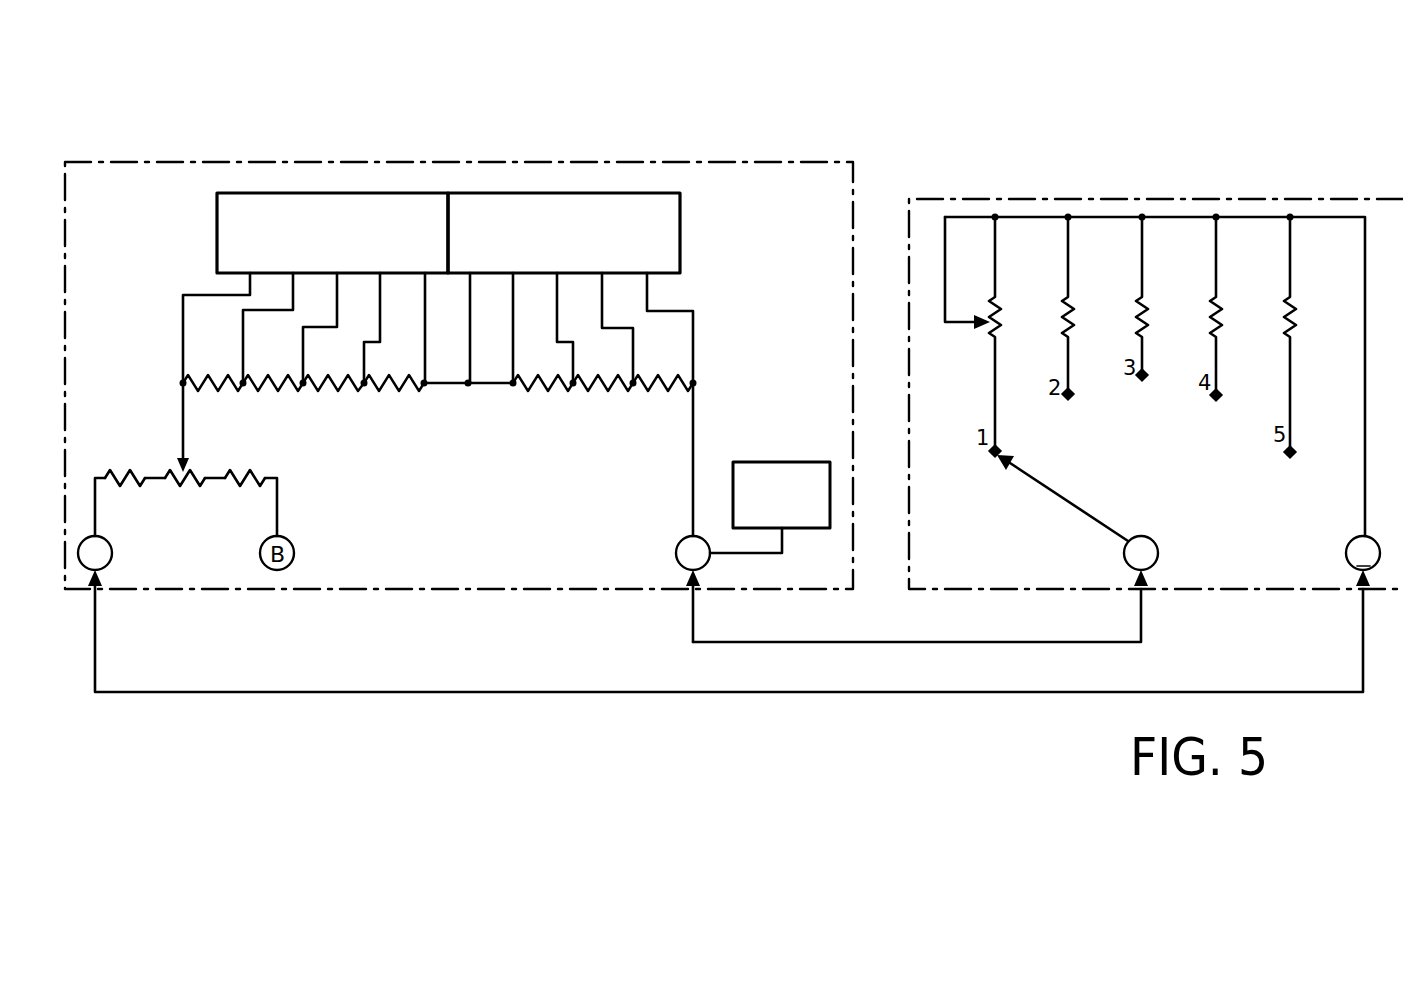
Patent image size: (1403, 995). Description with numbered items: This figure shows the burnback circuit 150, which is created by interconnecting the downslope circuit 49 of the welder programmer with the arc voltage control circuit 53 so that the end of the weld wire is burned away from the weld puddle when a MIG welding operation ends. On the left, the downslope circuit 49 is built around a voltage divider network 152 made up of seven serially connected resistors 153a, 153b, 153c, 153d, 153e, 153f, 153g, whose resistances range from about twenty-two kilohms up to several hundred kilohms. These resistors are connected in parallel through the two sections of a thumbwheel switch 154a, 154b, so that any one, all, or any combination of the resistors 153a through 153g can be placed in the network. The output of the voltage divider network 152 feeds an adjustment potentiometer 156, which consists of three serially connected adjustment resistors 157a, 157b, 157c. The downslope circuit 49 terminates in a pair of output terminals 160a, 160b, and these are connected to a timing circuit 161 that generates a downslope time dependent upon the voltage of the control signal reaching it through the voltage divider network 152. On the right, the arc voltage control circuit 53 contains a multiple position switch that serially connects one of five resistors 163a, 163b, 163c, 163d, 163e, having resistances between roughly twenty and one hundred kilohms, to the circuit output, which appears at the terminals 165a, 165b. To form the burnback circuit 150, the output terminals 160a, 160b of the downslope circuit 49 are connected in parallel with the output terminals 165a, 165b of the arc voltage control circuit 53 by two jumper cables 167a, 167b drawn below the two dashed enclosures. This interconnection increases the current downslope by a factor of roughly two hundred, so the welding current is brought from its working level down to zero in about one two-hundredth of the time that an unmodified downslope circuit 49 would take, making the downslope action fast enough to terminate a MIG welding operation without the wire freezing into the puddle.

The downslope circuit 49 is at (166, 182).
The arc voltage control circuit 53 is at (922, 212).
The burnback circuit 150 is at (872, 100).
The voltage divider network 152 is at (150, 321).
The resistor 153a is at (208, 390).
The resistor 153b is at (267, 390).
The resistor 153c is at (340, 390).
The resistor 153d is at (392, 392).
The resistor 153e is at (540, 392).
The resistor 153f is at (595, 392).
The resistor 153g is at (653, 392).
The thumbwheel switch 154a is at (217, 245).
The thumbwheel switch 154b is at (680, 245).
The adjustment potentiometer 156 is at (195, 457).
The adjustment resistor 157a is at (124, 472).
The adjustment resistor 157b is at (180, 488).
The adjustment resistor 157c is at (262, 470).
The output terminal 160a is at (112, 550).
The output terminal 160b is at (676, 548).
The timing circuit 161 is at (790, 462).
The resistor 163a is at (1005, 318).
The resistor 163b is at (1078, 318).
The resistor 163c is at (1152, 318).
The resistor 163d is at (1226, 318).
The resistor 163e is at (1300, 318).
The output terminal 165a is at (1160, 565).
The output terminal 165b is at (1346, 543).
The jumper cable 167a is at (740, 642).
The jumper cable 167b is at (740, 692).